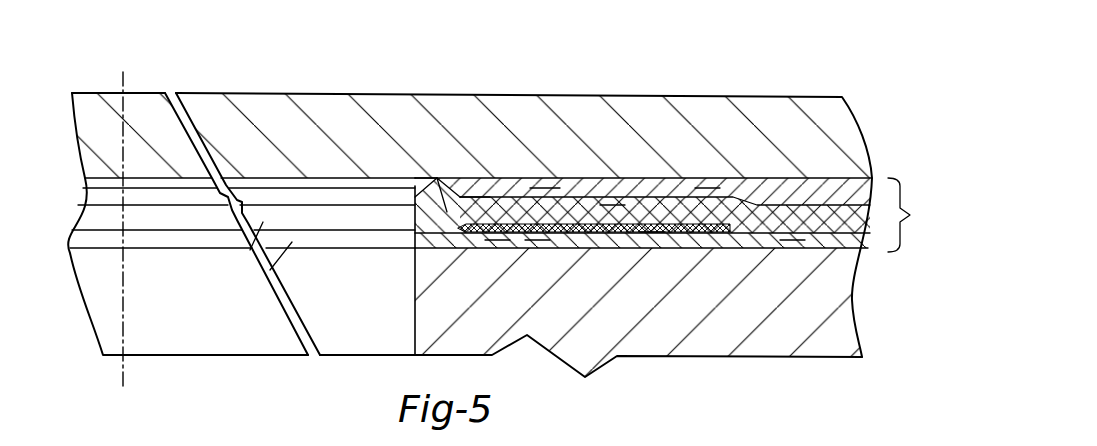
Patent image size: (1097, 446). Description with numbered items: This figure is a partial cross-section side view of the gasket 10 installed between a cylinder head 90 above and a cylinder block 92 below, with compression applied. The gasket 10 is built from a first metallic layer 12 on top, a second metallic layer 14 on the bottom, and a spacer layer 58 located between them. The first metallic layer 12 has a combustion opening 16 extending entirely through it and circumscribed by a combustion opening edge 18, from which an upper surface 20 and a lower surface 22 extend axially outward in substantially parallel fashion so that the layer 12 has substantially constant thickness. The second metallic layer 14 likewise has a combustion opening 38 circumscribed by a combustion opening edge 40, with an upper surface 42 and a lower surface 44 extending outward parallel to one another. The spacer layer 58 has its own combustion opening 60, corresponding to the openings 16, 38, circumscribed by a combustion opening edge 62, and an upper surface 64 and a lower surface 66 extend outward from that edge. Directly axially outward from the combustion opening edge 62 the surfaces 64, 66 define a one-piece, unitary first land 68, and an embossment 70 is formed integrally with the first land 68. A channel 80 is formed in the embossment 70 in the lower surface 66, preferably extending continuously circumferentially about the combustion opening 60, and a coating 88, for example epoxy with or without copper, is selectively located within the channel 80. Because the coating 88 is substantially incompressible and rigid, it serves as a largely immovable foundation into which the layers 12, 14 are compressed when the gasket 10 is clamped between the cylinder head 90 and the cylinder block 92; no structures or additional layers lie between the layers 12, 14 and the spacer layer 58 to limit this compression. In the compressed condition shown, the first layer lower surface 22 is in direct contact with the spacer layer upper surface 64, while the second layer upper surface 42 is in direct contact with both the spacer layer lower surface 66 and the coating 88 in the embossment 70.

The gasket 10 is at (916, 215).
The first metallic layer 12 is at (847, 190).
The second metallic layer 14 is at (857, 245).
The combustion opening 16 is at (232, 210).
The combustion opening edge 18 is at (419, 195).
The upper surface 20 is at (472, 197).
The lower surface 22 is at (548, 190).
The combustion opening 38 is at (290, 243).
The combustion opening edge 40 is at (413, 238).
The upper surface 42 is at (497, 238).
The lower surface 44 is at (537, 236).
The spacer layer 58 is at (843, 222).
The combustion opening 60 is at (248, 247).
The combustion opening edge 62 is at (413, 215).
The upper surface 64 is at (707, 188).
The lower surface 66 is at (792, 237).
The first land 68 is at (447, 212).
The embossment 70 is at (612, 205).
The channel 80 is at (597, 236).
The coating 88 is at (650, 233).
The cylinder head 90 is at (818, 113).
The cylinder block 92 is at (775, 340).